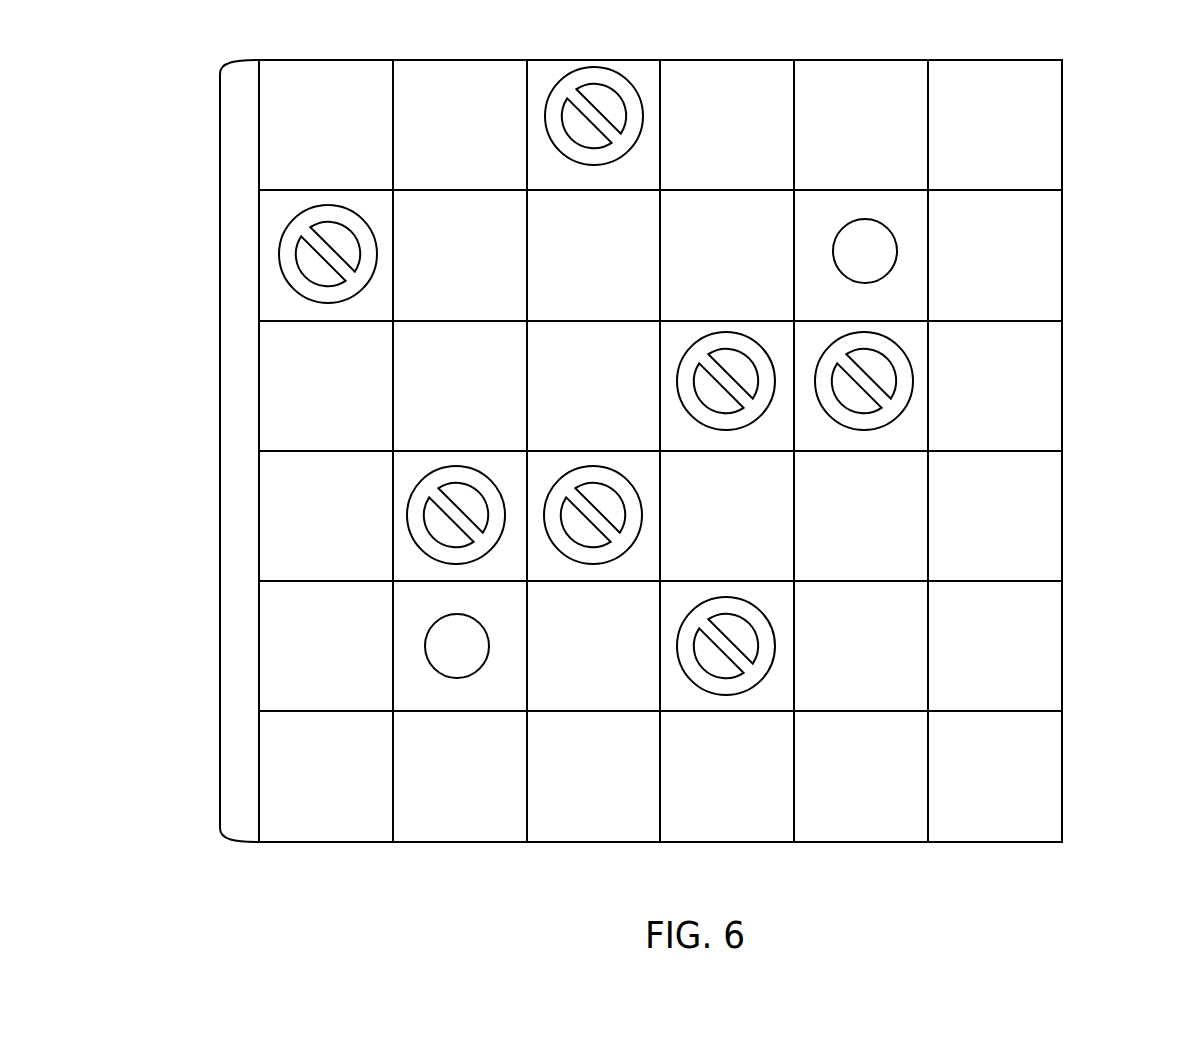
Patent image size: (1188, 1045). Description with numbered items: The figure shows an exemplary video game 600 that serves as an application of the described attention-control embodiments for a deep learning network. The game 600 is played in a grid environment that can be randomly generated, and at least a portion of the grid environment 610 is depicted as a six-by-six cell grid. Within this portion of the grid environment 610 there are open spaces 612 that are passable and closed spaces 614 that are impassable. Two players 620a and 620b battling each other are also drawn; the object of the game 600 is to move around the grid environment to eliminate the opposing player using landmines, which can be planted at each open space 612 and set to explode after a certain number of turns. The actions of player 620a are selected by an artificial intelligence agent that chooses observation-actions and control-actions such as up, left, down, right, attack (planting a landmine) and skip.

The video game 600 is at (712, 49).
The portion of the grid environment 610 is at (220, 462).
The open space 612 is at (1007, 393).
The closed space 614 is at (775, 646).
The player 620a is at (898, 250).
The player 620b is at (458, 678).